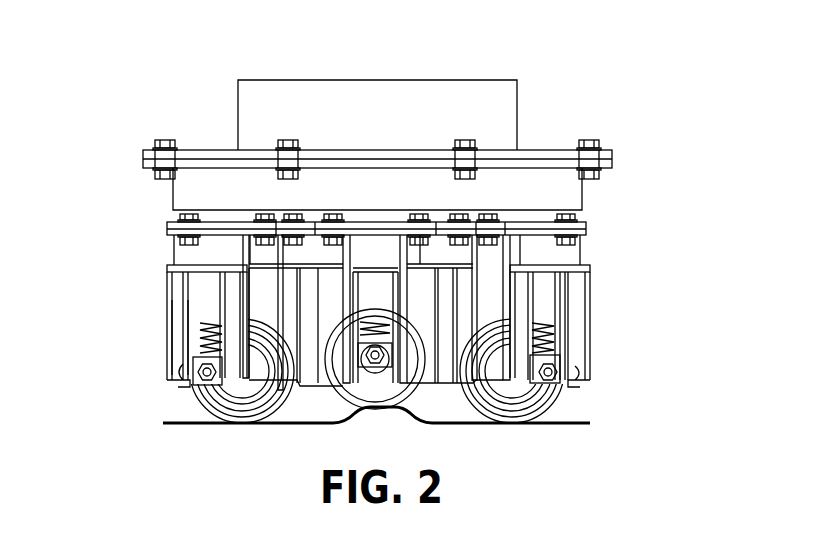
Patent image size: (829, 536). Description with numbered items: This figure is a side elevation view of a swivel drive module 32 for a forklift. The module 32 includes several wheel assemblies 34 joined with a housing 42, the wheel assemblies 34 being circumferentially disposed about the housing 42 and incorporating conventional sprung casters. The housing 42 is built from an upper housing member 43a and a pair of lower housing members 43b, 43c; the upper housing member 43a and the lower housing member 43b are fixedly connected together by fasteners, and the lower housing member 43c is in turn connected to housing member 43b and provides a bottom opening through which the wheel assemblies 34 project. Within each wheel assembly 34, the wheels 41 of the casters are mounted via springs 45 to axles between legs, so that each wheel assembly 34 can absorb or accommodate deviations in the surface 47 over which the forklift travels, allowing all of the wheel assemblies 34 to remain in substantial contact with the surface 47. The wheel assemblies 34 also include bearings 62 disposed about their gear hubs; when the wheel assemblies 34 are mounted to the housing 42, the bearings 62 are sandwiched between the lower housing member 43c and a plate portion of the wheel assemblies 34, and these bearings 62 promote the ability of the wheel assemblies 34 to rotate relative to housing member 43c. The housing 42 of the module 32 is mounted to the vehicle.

The module 32 is at (233, 80).
The housing 42 is at (522, 110).
The upper housing member 43a is at (282, 110).
The lower housing member 43b is at (612, 157).
The lower housing member 43c is at (562, 195).
The bearings 62 is at (228, 213).
The wheel assemblies 34 is at (165, 328).
The springs 45 is at (202, 338).
The wheels 41 is at (235, 408).
The surface 47 is at (572, 422).